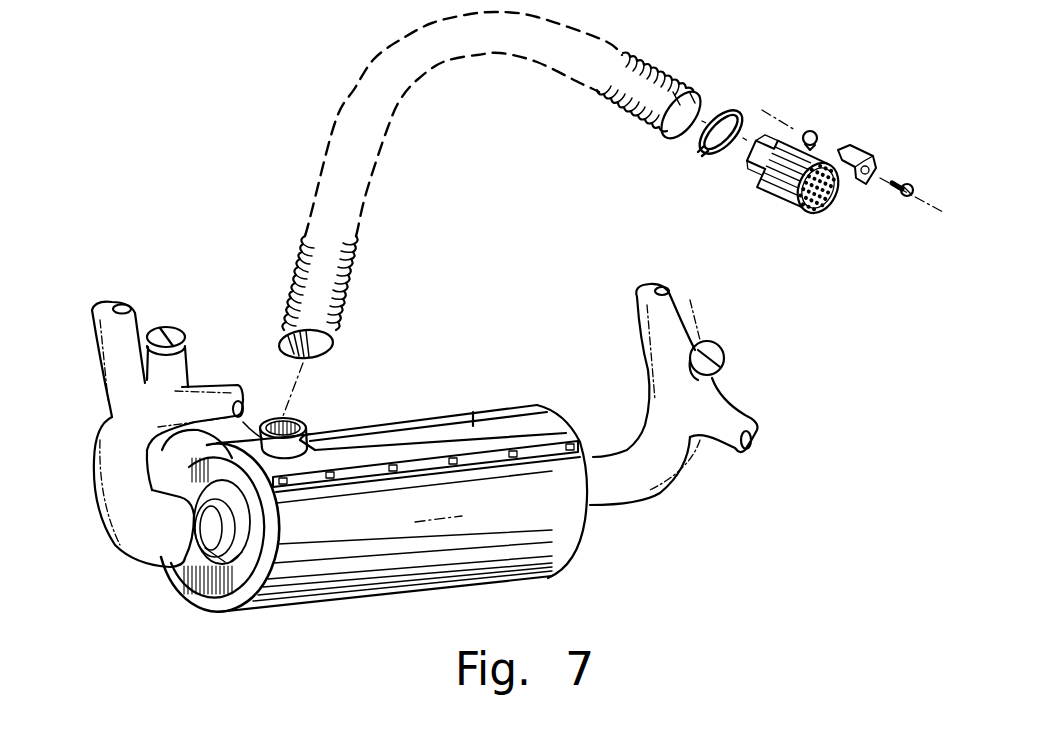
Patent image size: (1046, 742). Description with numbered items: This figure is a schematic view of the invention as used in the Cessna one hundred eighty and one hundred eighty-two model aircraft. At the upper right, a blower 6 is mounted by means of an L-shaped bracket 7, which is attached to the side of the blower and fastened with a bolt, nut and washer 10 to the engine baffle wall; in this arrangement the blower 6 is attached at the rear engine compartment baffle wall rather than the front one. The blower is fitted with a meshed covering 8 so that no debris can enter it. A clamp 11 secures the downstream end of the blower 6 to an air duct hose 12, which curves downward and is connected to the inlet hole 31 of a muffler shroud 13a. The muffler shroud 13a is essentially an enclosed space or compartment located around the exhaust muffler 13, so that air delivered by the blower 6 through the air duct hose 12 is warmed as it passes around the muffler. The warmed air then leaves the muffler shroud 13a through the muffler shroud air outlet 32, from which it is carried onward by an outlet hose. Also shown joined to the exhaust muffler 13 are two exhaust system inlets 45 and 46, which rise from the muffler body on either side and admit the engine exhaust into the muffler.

The blower 6 is at (770, 196).
The L-shaped bracket 7 is at (868, 152).
The meshed covering 8 is at (832, 202).
The bolt, nut and washer 10 is at (812, 133).
The clamp 11 is at (728, 106).
The air duct hose 12 is at (657, 64).
The exhaust muffler 13 is at (473, 413).
The muffler shroud 13a is at (548, 400).
The inlet hole 31 is at (303, 420).
The muffler shroud air outlet 32 is at (250, 428).
The exhaust system inlet 45 is at (677, 313).
The exhaust system inlet 46 is at (137, 320).